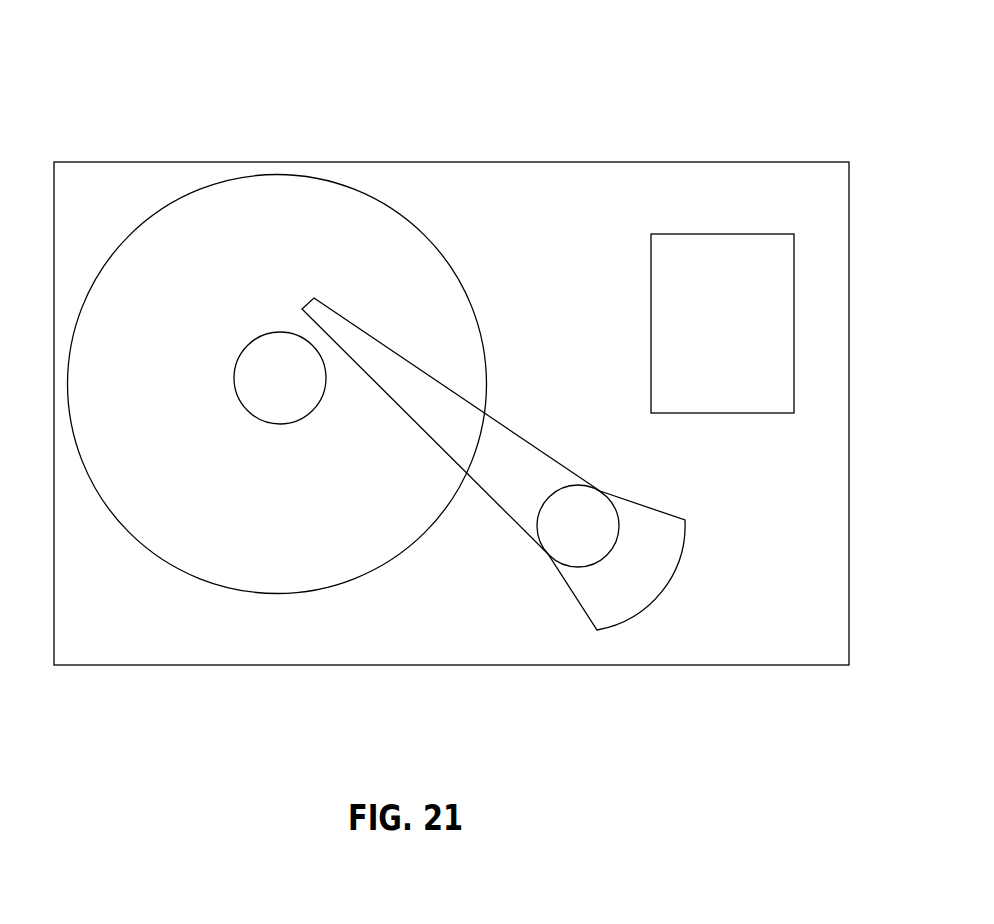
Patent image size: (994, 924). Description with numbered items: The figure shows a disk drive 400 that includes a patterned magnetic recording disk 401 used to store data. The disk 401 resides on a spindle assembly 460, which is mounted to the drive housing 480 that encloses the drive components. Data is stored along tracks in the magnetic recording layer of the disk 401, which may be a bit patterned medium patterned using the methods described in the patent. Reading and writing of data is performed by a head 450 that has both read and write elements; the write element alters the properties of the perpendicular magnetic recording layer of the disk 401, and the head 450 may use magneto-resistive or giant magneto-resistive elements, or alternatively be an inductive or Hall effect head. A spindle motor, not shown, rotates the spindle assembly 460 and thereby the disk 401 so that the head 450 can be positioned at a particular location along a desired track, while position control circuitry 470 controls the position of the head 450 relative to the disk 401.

The disk drive 400 is at (464, 55).
The disk 401 is at (188, 575).
The head 450 is at (337, 313).
The spindle assembly 460 is at (300, 387).
The position control circuitry 470 is at (742, 334).
The drive housing 480 is at (597, 162).